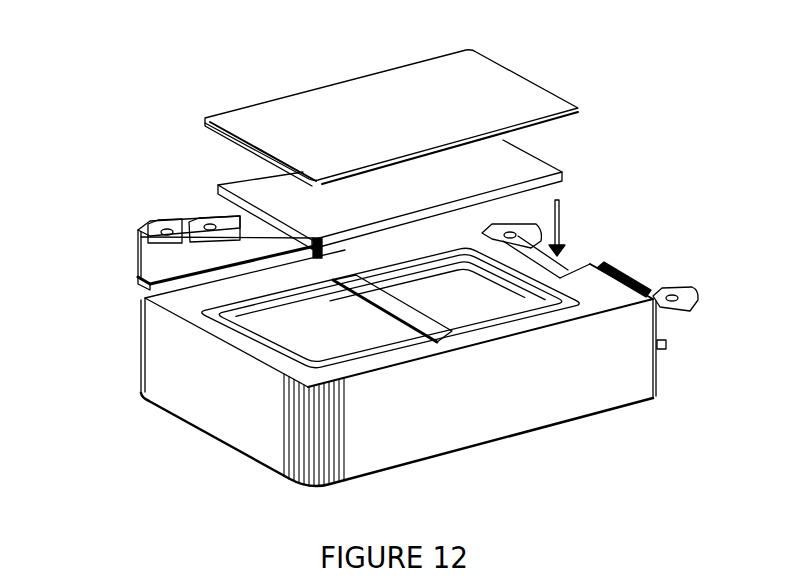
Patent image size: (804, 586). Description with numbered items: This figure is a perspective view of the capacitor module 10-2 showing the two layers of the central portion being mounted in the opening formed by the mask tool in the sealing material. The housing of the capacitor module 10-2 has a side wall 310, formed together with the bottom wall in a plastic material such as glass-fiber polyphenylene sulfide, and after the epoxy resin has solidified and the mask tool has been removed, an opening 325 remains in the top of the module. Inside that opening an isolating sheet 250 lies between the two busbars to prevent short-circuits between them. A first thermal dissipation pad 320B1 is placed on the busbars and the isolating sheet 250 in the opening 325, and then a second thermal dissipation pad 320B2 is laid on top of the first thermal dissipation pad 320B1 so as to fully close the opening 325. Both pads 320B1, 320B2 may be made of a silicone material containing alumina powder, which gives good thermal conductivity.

The capacitor module 10-2 is at (146, 152).
The side wall 310 is at (552, 403).
The opening 325 is at (270, 333).
The isolating sheet 250 is at (447, 328).
The first thermal dissipation pad 320B1 is at (548, 166).
The second thermal dissipation pad 320B2 is at (517, 77).